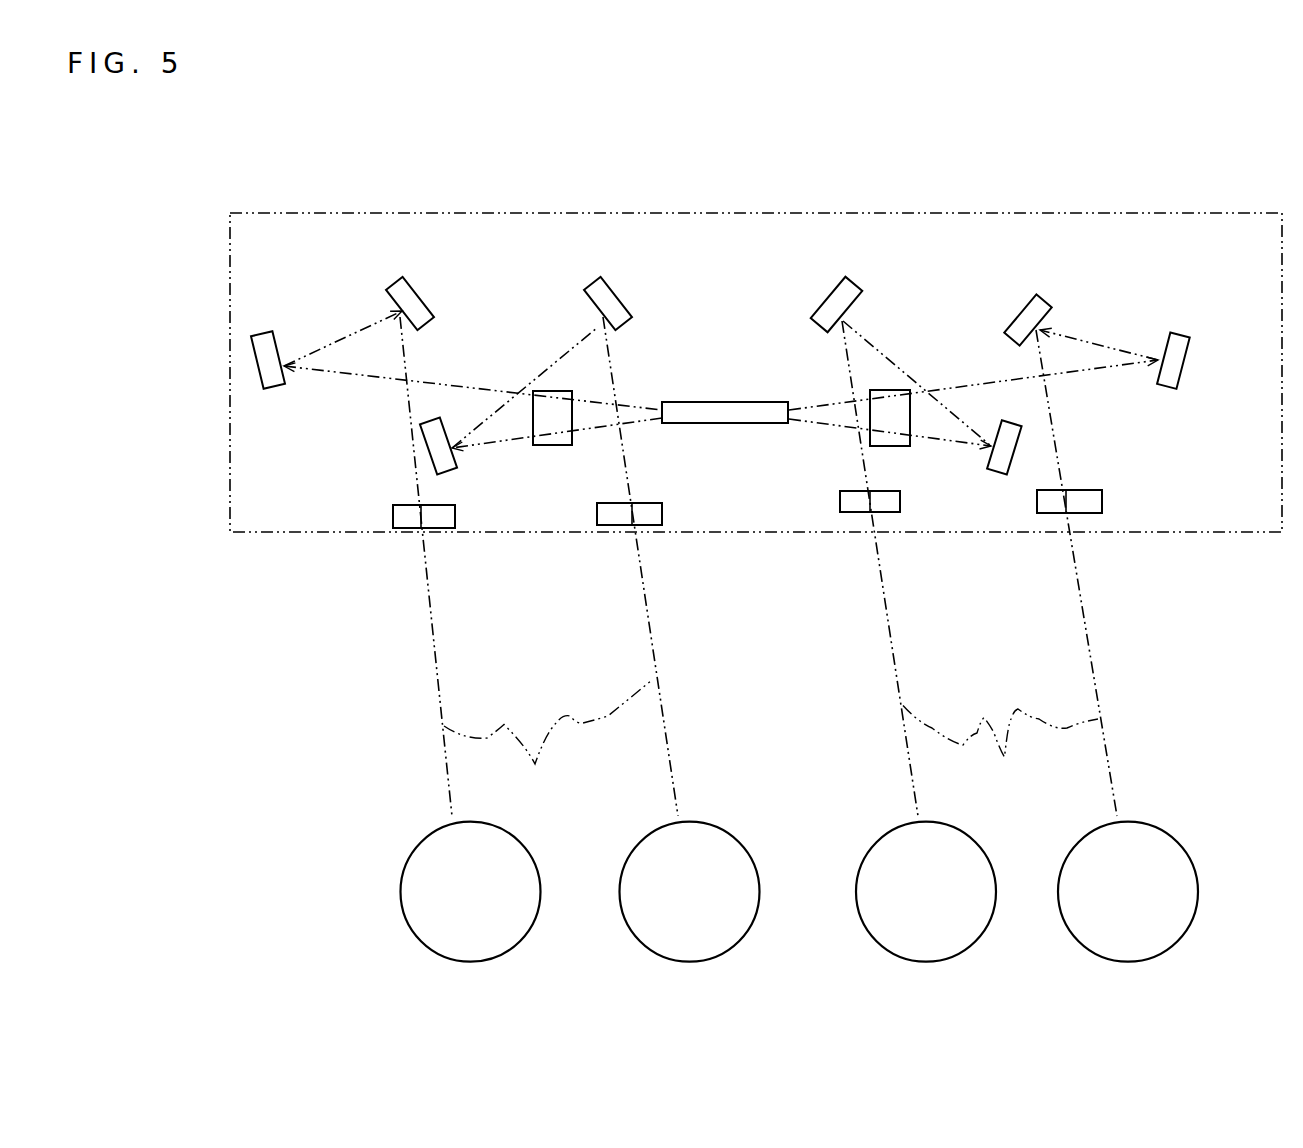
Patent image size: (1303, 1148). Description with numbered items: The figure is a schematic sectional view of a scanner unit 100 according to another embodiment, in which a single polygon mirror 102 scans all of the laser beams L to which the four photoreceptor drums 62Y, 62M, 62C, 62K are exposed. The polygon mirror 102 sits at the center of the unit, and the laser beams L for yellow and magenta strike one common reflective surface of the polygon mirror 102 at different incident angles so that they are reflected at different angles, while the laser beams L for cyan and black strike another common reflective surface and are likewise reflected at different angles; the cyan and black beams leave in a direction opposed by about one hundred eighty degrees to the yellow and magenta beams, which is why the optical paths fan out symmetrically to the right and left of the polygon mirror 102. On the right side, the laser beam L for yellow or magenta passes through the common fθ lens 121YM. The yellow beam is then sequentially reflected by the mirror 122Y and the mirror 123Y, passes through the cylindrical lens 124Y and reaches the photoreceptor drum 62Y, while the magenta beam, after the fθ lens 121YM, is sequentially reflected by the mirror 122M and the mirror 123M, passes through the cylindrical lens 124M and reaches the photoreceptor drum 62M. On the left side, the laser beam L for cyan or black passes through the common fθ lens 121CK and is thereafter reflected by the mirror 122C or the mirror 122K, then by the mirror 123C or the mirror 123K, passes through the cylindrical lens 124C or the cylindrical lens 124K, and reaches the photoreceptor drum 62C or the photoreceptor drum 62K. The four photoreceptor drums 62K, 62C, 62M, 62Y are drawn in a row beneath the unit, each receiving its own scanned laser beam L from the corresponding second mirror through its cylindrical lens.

The scanner unit 100 is at (403, 212).
The polygon mirror 102 is at (697, 404).
The fθ lens 121CK is at (553, 447).
The fθ lens 121YM is at (889, 447).
The mirror 122K is at (263, 334).
The mirror 122C is at (455, 476).
The mirror 122M is at (993, 475).
The mirror 122Y is at (1181, 334).
The mirror 123K is at (418, 290).
The mirror 123C is at (598, 288).
The mirror 123M is at (847, 281).
The mirror 123Y is at (1040, 292).
The cylindrical lens 124K is at (393, 512).
The cylindrical lens 124C is at (641, 527).
The cylindrical lens 124M is at (858, 512).
The cylindrical lens 124Y is at (1086, 514).
The photoreceptor drum 62K is at (428, 833).
The photoreceptor drum 62C is at (685, 819).
The photoreceptor drum 62M is at (892, 833).
The photoreceptor drum 62Y is at (1142, 819).
The laser beam L is at (771, 738).